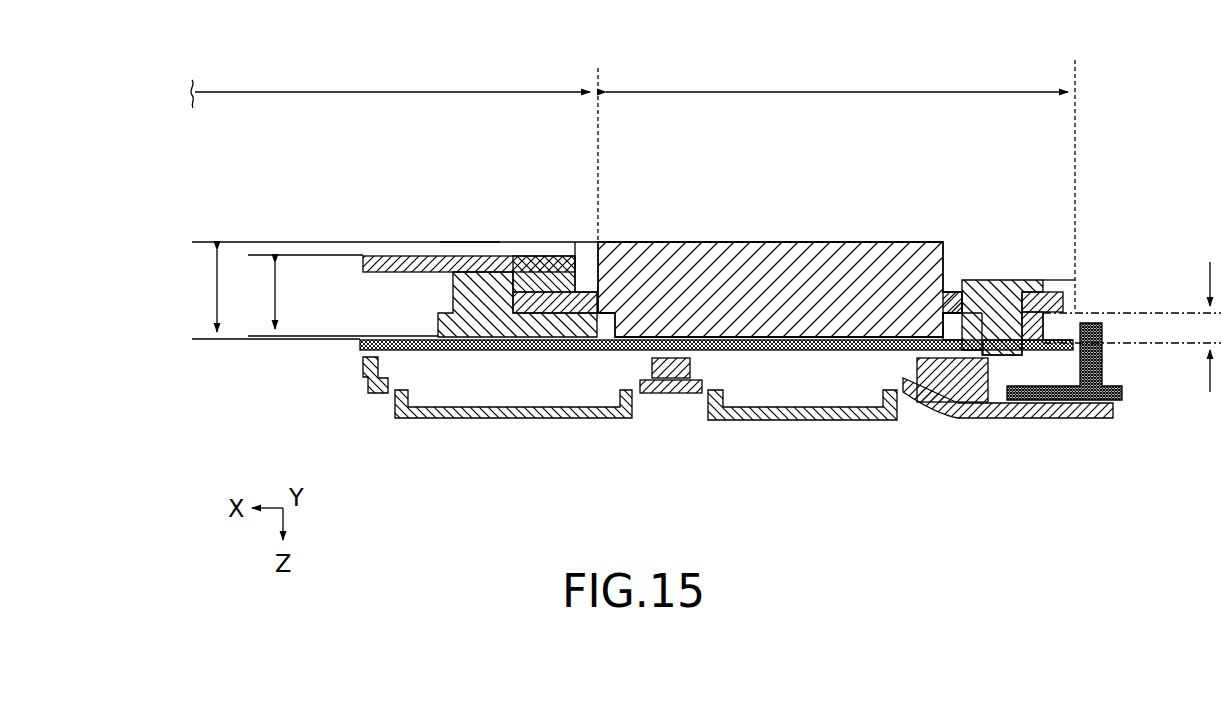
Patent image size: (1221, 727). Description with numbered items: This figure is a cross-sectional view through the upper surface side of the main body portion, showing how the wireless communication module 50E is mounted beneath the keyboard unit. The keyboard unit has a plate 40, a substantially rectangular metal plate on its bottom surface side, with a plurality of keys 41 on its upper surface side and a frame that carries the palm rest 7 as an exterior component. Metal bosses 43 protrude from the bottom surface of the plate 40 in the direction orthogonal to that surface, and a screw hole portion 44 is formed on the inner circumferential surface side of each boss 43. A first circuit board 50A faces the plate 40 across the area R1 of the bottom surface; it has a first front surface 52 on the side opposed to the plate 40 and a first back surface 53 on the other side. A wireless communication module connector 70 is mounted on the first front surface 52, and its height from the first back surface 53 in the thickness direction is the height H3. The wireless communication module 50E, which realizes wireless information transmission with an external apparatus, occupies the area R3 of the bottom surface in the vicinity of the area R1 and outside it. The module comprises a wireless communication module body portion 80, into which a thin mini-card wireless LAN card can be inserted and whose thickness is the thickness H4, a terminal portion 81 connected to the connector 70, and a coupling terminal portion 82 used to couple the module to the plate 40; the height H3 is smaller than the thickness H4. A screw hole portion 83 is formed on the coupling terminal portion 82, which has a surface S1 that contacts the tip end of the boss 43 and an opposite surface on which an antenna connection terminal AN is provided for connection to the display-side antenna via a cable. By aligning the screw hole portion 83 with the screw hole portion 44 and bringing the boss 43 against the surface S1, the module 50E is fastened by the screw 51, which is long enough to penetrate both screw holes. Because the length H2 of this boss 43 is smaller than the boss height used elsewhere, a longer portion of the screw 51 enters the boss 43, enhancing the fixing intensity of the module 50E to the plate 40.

The plate 40 is at (380, 335).
The keys 41 is at (512, 420).
The boss 43 is at (1085, 322).
The screw hole portion 44 is at (1008, 352).
The palm rest 7 is at (673, 394).
The first circuit board 50A is at (467, 236).
The wireless communication module 50E is at (768, 236).
The screw 51 is at (983, 280).
The first front surface 52 is at (412, 274).
The first back surface 53 is at (403, 255).
The wireless communication module connector 70 is at (520, 268).
The wireless communication module body portion 80 is at (862, 242).
The terminal portion 81 is at (582, 290).
The coupling terminal portion 82 is at (955, 290).
The screw hole portion 83 is at (1020, 291).
The antenna connection terminal AN is at (1050, 283).
The surface S1 is at (1042, 335).
The height H2 is at (1132, 327).
The height H3 is at (251, 296).
The thickness H4 is at (193, 291).
The area R1 is at (394, 151).
The area R3 is at (840, 185).